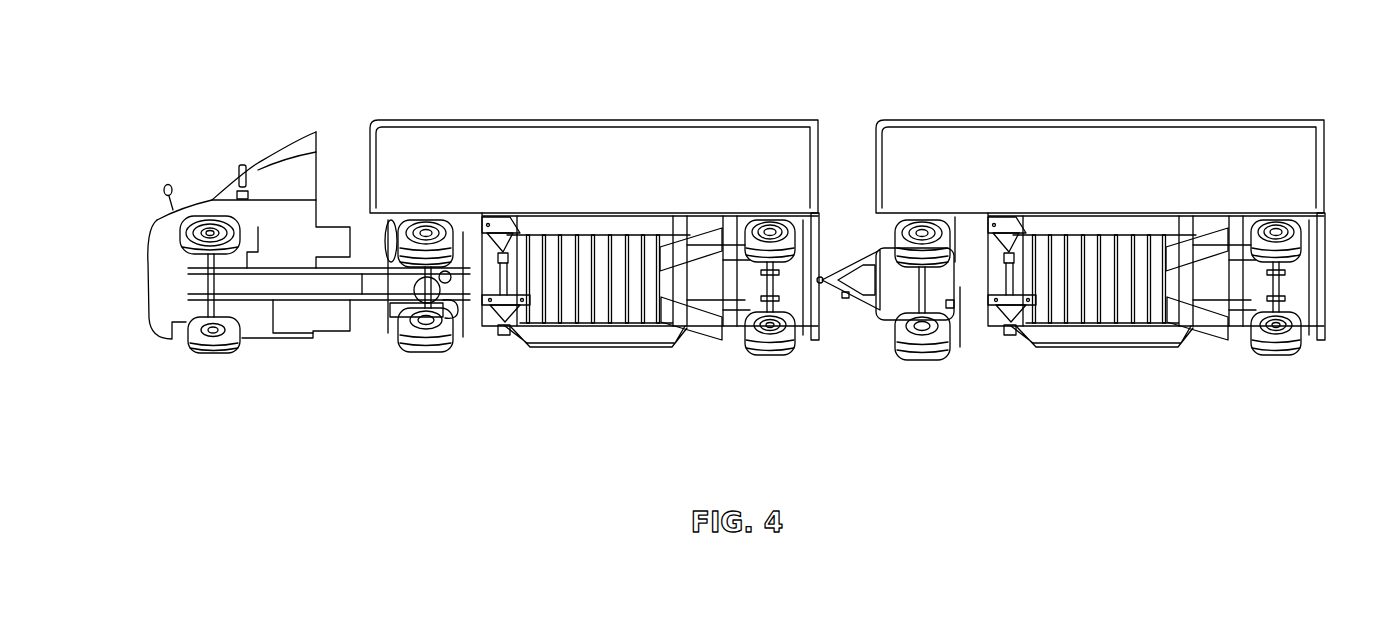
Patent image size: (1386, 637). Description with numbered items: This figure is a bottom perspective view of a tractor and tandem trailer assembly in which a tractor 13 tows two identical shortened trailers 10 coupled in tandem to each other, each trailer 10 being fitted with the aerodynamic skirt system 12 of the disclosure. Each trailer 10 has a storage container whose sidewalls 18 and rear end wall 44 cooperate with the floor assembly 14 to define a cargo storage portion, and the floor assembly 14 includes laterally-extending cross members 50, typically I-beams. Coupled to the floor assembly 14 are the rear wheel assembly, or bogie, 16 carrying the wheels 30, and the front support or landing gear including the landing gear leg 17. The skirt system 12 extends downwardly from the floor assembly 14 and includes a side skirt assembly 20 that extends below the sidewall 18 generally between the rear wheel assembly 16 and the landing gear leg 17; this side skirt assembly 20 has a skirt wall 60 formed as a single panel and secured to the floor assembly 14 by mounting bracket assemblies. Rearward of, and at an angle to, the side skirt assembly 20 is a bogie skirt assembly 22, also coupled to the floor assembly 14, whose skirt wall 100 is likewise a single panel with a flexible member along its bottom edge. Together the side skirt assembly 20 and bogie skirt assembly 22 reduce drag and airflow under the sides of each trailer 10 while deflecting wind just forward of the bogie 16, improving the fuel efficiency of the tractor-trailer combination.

The trailer 10 is at (774, 79).
The aerodynamic skirt system 12 is at (523, 413).
The tractor 13 is at (305, 118).
The floor assembly 14 is at (558, 305).
The rear wheel assembly 16 is at (806, 339).
The landing gear leg 17 is at (503, 336).
The sidewall 18 is at (600, 172).
The side skirt assembly 20 is at (530, 207).
The bogie skirt assembly 22 is at (674, 250).
The wheels 30 is at (1303, 233).
The rear end wall 44 is at (822, 170).
The cross members 50 is at (1077, 257).
The skirt wall 60 is at (563, 222).
The skirt wall 100 is at (701, 241).